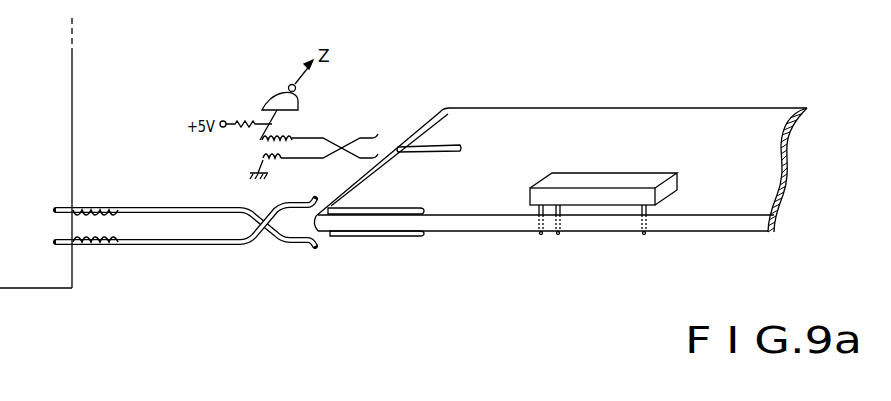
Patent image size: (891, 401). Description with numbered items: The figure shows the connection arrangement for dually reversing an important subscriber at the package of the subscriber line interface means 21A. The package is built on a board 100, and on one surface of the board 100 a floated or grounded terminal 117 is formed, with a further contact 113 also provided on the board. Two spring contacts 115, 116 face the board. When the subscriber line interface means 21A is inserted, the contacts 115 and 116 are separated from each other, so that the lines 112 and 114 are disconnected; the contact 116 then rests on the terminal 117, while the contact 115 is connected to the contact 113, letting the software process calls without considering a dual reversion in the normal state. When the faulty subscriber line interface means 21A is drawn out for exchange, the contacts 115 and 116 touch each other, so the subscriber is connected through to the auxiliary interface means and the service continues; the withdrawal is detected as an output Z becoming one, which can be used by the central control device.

The board 100 is at (677, 223).
The subscriber line interface means 21A is at (737, 223).
The line 112 is at (35, 290).
The contact 113 is at (385, 236).
The line 114 is at (73, 137).
The contact 115 is at (257, 243).
The contact 116 is at (250, 207).
The floated or grounded terminal 117 is at (392, 208).